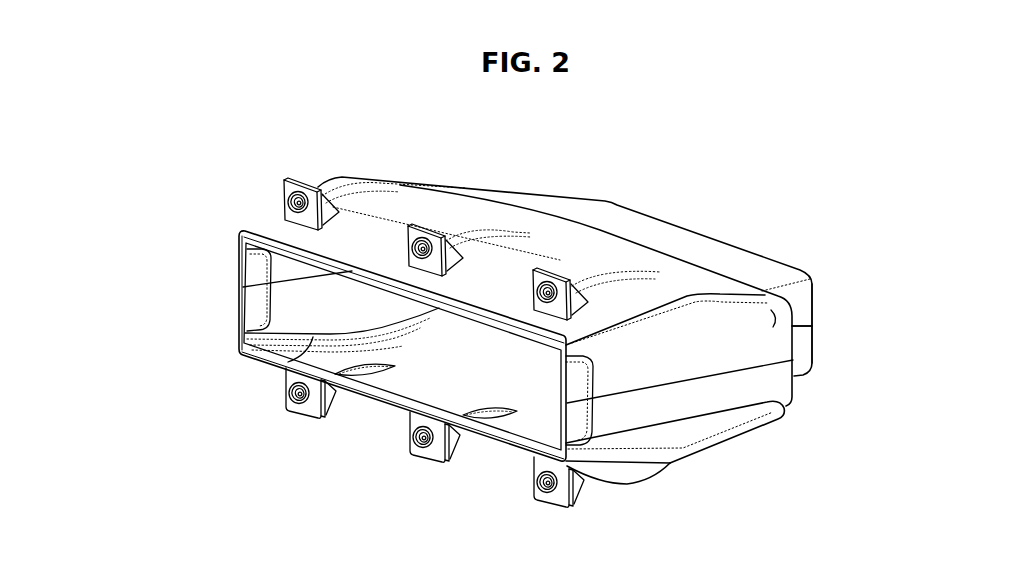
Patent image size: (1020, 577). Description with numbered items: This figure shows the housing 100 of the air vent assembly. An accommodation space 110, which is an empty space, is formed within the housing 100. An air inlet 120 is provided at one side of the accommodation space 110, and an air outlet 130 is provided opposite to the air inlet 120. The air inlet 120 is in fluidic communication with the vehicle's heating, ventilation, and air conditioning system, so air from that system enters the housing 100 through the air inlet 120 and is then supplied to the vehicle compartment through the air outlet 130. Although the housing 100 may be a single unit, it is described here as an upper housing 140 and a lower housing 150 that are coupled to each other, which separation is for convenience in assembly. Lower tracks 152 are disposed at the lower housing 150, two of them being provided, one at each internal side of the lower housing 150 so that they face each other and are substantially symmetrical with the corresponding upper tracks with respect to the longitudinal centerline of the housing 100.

The housing 100 is at (701, 211).
The accommodation space 110 is at (467, 358).
The air inlet 120 is at (828, 304).
The air outlet 130 is at (242, 309).
The upper housing 140 is at (397, 213).
The lower housing 150 is at (661, 452).
The lower tracks 152 is at (282, 362).